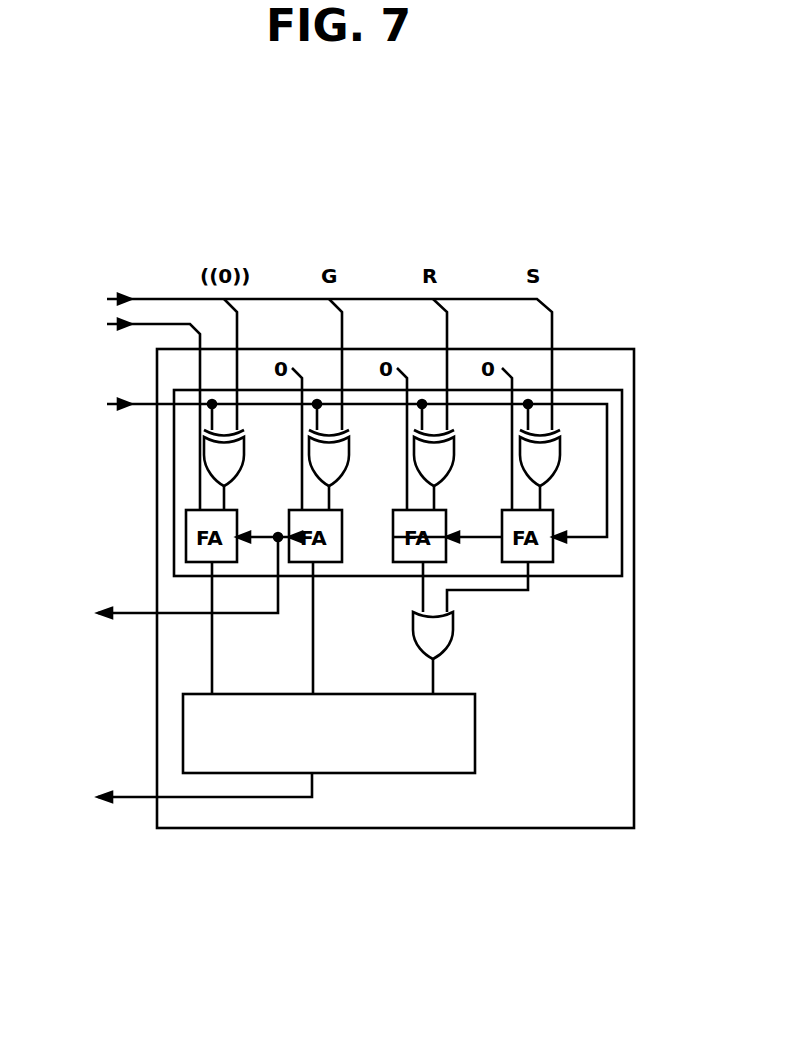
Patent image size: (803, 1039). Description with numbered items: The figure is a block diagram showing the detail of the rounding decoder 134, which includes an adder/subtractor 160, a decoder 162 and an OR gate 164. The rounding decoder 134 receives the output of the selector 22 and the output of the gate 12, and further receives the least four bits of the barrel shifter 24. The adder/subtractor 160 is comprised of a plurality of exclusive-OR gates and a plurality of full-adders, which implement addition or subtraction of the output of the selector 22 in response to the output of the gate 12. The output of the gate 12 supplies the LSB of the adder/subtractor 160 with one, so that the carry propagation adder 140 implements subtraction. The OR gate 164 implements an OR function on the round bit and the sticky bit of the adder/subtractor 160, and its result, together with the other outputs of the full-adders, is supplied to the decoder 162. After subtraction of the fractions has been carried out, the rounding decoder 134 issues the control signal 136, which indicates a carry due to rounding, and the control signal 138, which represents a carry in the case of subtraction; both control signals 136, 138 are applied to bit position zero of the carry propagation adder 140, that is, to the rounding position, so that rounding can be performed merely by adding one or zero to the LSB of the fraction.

The gate 12 is at (333, 466).
The selector 22 is at (129, 411).
The barrel shifter 24 is at (305, 358).
The rounding decoder 134 is at (512, 829).
The control signal 136 is at (140, 610).
The control signal 138 is at (143, 792).
The carry propagation adder 140 is at (74, 704).
The adder/subtractor 160 is at (565, 577).
The decoder 162 is at (475, 725).
The OR gate 164 is at (455, 628).